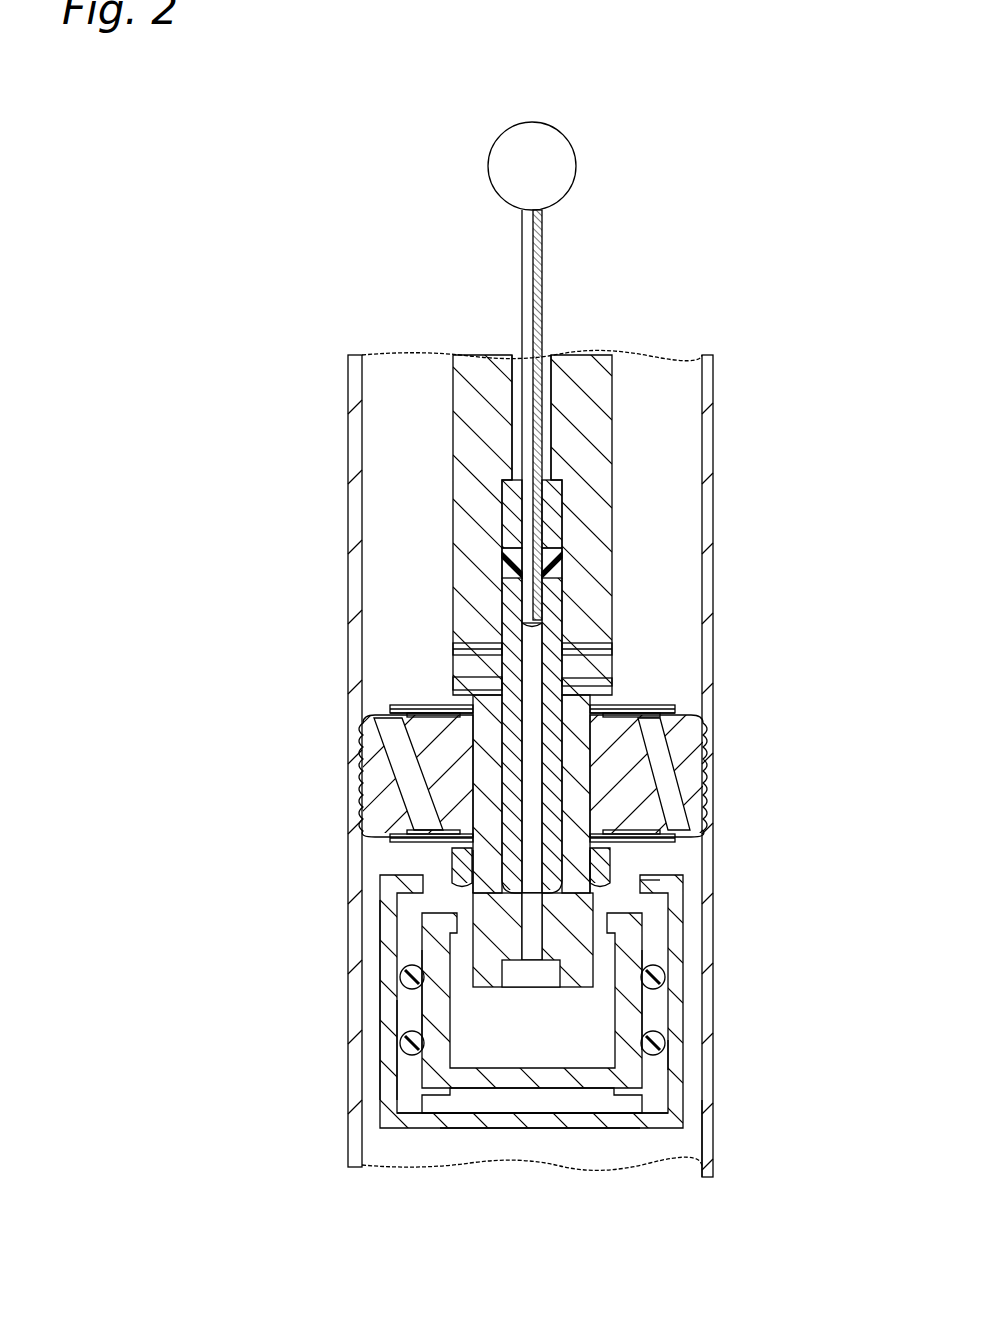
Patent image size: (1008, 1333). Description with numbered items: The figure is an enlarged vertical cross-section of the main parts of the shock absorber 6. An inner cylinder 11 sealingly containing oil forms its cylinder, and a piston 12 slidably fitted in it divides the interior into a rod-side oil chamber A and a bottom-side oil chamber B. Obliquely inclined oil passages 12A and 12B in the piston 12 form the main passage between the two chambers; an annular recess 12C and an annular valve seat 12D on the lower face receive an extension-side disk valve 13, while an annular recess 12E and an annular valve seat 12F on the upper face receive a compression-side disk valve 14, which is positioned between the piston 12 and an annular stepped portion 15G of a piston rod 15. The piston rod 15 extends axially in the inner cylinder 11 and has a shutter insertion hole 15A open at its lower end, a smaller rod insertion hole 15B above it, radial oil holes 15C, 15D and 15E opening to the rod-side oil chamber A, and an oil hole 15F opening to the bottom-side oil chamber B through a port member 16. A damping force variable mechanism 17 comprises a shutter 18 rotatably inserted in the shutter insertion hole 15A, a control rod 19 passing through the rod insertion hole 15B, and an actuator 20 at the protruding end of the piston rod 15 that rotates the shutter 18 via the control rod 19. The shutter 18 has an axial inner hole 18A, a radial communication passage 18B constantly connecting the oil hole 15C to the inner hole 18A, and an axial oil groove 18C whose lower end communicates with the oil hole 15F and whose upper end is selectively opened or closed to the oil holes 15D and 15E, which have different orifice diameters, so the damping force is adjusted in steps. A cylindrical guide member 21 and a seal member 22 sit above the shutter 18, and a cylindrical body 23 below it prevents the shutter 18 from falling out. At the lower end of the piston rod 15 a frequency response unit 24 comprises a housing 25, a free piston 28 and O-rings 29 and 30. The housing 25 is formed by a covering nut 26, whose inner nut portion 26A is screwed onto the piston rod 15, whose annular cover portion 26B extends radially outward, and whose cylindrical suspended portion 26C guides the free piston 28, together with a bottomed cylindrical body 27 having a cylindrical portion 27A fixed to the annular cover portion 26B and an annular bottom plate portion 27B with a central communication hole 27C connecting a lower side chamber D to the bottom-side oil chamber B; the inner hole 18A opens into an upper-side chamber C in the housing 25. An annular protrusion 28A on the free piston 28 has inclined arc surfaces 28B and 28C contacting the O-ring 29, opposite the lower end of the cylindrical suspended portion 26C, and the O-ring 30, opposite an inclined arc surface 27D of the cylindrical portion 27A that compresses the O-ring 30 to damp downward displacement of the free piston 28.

The shock absorber 6 is at (345, 410).
The inner cylinder 11 is at (355, 460).
The piston 12 is at (360, 800).
The oil passage 12A is at (395, 760).
The oil passage 12B is at (660, 760).
The annular recess 12C is at (420, 840).
The annular valve seat 12D is at (660, 838).
The annular recess 12E is at (660, 712).
The annular valve seat 12F is at (395, 714).
The extension-side disk valve 13 is at (600, 850).
The compression-side disk valve 14 is at (400, 708).
The piston rod 15 is at (587, 400).
The shutter insertion hole 15A is at (548, 560).
The rod insertion hole 15B is at (557, 367).
The oil hole 15C is at (460, 648).
The oil hole 15D is at (455, 682).
The oil hole 15E is at (605, 682).
The oil hole 15F is at (455, 860).
The annular stepped portion 15G is at (620, 708).
The port member 16 is at (605, 870).
The damping force variable mechanism 17 is at (510, 410).
The shutter 18 is at (550, 615).
The inner hole 18A is at (680, 792).
The communication passage 18B is at (500, 605).
The oil groove 18C is at (380, 790).
The control rod 19 is at (527, 283).
The actuator 20 is at (578, 168).
The cylindrical guide member 21 is at (560, 500).
The seal member 22 is at (505, 555).
The cylindrical body 23 is at (478, 940).
The frequency response unit 24 is at (453, 1130).
The housing 25 is at (710, 1125).
The covering nut 26 is at (430, 915).
The inner nut portion 26A is at (428, 955).
The annular cover portion 26B is at (650, 895).
The cylindrical suspended portion 26C is at (640, 935).
The bottomed cylindrical body 27 is at (390, 1125).
The cylindrical portion 27A is at (390, 1010).
The annular bottom plate portion 27B is at (568, 1125).
The communication hole 27C is at (525, 1125).
The inclined arc surface 27D is at (400, 1090).
The free piston 28 is at (675, 1115).
The annular protrusion 28A is at (655, 1043).
The inclined arc surface 28B is at (405, 977).
The inclined arc surface 28C is at (408, 1043).
The O-ring 29 is at (658, 977).
The O-ring 30 is at (650, 1050).
The rod-side oil chamber A is at (665, 405).
The bottom-side oil chamber B is at (657, 1150).
The upper-side chamber C is at (445, 1128).
The lower side chamber D is at (595, 1125).